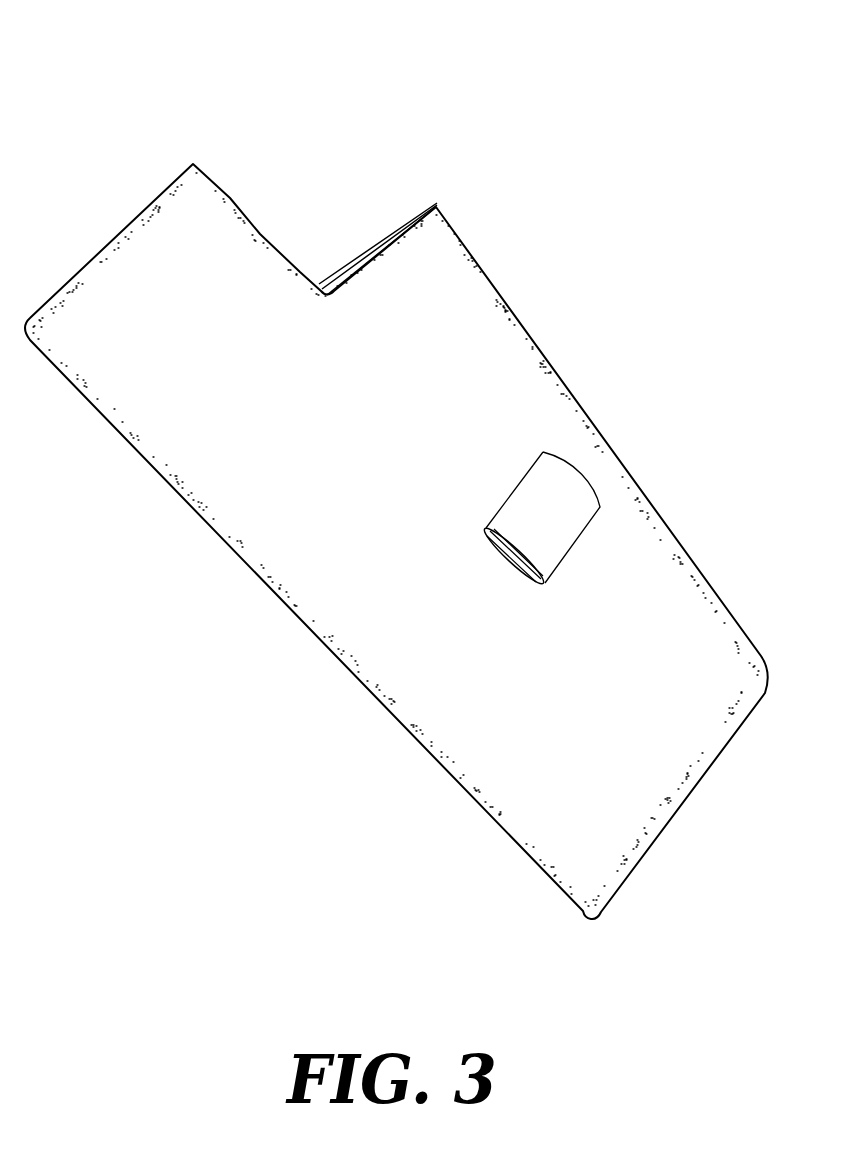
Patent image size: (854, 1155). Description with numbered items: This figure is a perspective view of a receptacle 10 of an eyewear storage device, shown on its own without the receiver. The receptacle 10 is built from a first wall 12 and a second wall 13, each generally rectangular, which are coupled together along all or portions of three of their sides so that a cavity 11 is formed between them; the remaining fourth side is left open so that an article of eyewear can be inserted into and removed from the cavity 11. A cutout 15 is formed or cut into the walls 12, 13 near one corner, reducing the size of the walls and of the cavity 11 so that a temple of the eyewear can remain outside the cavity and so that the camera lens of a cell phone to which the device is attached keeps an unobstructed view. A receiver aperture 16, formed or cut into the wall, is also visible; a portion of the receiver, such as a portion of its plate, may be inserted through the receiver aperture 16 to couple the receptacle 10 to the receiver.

The receptacle 10 is at (396, 466).
The cavity 11 is at (354, 261).
The first wall 12 is at (482, 377).
The second wall 13 is at (325, 286).
The cutout 15 is at (364, 210).
The receiver aperture 16 is at (512, 556).